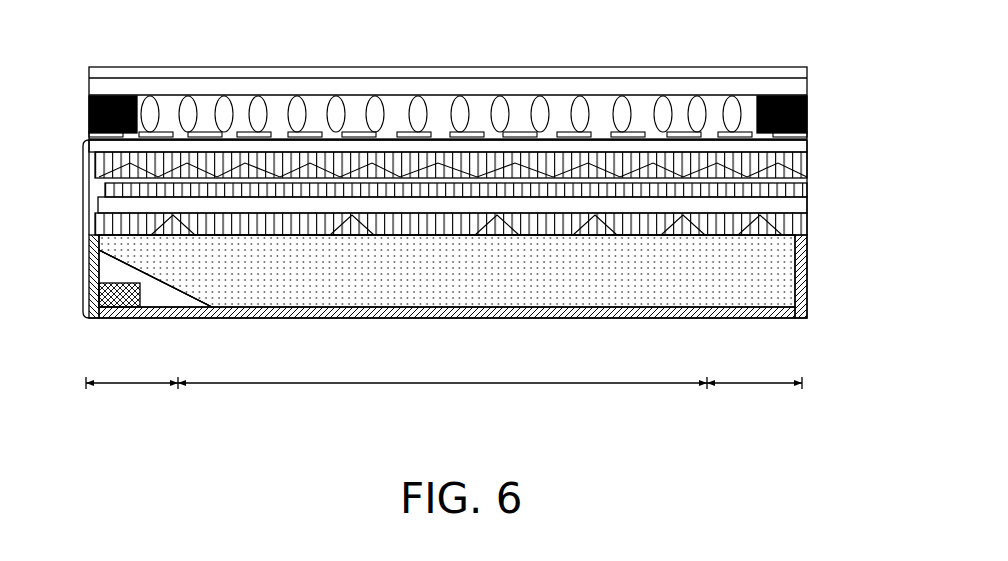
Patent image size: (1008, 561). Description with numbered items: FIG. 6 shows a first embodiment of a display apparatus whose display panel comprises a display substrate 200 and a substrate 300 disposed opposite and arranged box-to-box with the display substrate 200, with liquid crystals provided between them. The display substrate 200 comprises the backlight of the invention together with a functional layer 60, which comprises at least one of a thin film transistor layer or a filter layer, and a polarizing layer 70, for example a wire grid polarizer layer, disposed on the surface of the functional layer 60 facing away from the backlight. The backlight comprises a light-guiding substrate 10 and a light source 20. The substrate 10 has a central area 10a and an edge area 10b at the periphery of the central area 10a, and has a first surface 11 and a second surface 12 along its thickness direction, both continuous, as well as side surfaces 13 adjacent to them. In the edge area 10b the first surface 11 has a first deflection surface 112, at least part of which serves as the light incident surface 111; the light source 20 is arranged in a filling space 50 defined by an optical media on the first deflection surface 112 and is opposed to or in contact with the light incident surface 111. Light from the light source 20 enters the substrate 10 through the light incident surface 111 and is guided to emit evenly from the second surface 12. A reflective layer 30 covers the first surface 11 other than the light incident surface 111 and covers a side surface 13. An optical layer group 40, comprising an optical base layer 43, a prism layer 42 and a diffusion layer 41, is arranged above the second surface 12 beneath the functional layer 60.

The substrate 300 is at (441, 103).
The display substrate 200 is at (462, 243).
The polarizing layer 70 is at (806, 125).
The functional layer 60 is at (773, 147).
The optical layer group 40 is at (487, 192).
The optical base layer 43 is at (773, 177).
The prism layer 42 is at (773, 204).
The diffusion layer 41 is at (773, 225).
The reflective layer 30 is at (347, 311).
The second surface 12 is at (287, 242).
The substrate 10 is at (448, 298).
The first surface 11 is at (477, 313).
The side surface 13 is at (795, 290).
The light incident surface 111 is at (167, 306).
The first deflection surface 112 is at (181, 300).
The filling space 50 is at (148, 300).
The light source 20 is at (120, 300).
The central area 10a is at (442, 392).
The edge area 10b is at (444, 392).